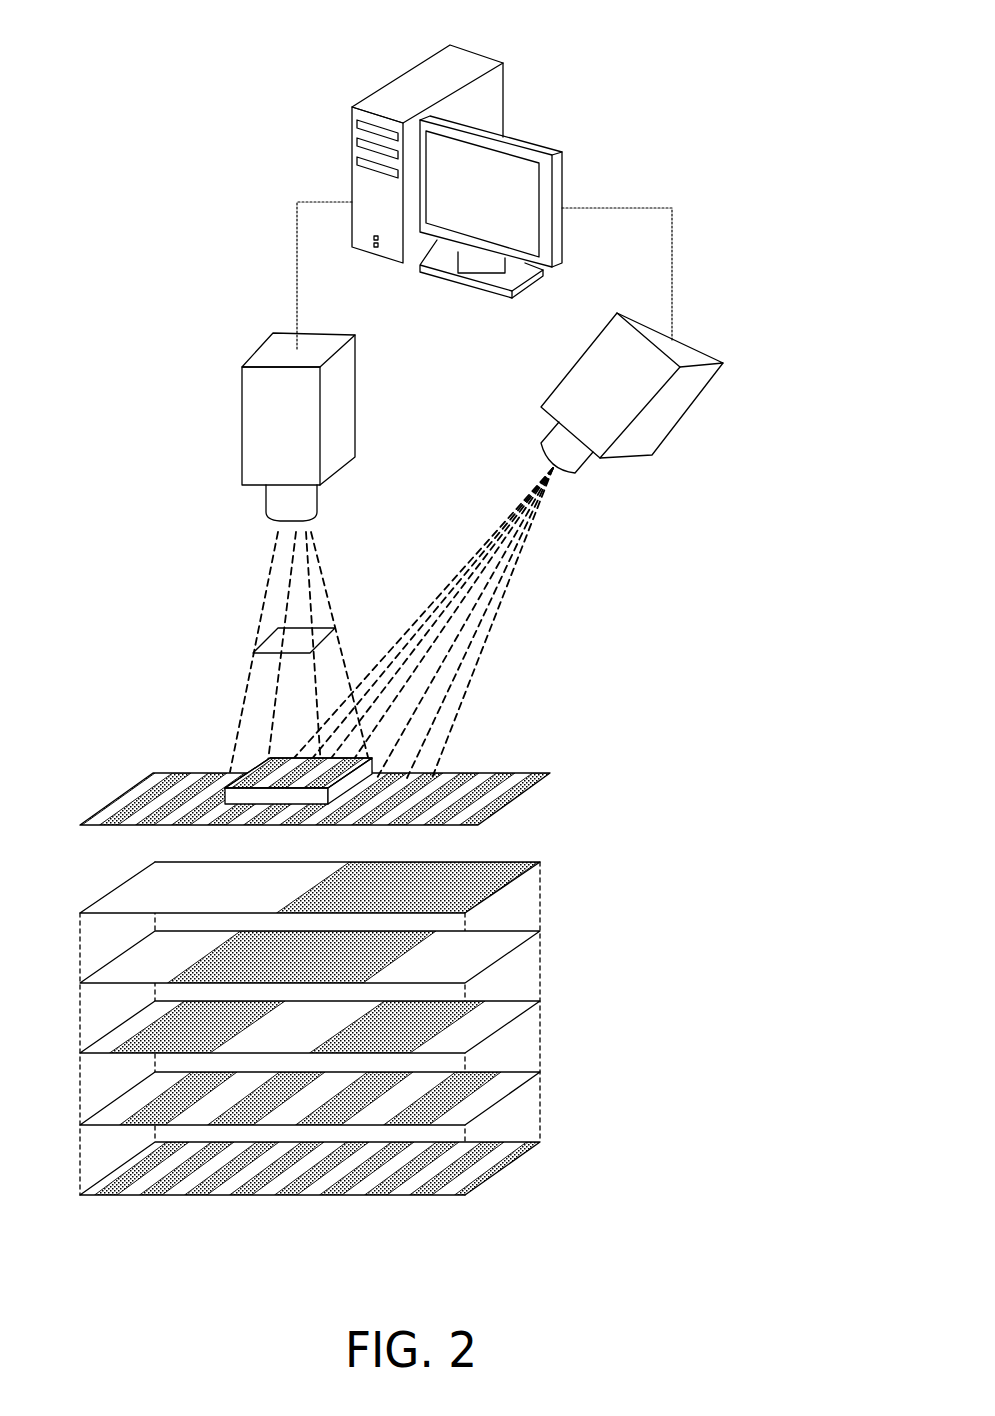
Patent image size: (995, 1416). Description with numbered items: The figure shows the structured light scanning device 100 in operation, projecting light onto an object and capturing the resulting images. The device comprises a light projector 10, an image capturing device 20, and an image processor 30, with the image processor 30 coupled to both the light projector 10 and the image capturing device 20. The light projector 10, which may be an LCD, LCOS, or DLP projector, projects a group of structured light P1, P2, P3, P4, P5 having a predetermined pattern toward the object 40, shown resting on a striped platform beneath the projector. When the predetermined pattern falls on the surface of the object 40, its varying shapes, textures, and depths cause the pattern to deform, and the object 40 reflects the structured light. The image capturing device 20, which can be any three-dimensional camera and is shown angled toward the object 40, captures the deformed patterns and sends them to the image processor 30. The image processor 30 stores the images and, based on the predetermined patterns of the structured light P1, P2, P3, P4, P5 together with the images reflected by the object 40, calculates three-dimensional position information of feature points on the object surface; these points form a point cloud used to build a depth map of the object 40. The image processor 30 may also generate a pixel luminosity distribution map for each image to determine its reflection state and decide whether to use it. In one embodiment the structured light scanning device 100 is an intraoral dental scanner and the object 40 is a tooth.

The structured light scanning device 100 is at (682, 86).
The light projector 10 is at (677, 402).
The image capturing device 20 is at (260, 428).
The image processor 30 is at (493, 102).
The object 40 is at (255, 763).
The structured light P1 is at (333, 879).
The structured light P2 is at (333, 949).
The structured light P3 is at (333, 1019).
The structured light P4 is at (310, 1091).
The structured light P5 is at (299, 1161).